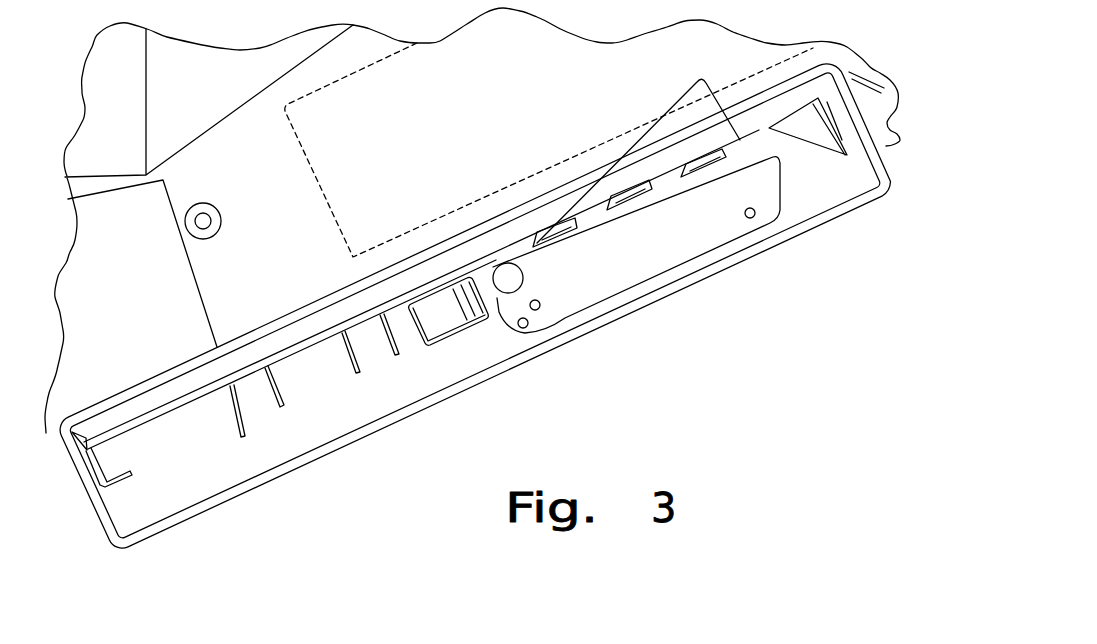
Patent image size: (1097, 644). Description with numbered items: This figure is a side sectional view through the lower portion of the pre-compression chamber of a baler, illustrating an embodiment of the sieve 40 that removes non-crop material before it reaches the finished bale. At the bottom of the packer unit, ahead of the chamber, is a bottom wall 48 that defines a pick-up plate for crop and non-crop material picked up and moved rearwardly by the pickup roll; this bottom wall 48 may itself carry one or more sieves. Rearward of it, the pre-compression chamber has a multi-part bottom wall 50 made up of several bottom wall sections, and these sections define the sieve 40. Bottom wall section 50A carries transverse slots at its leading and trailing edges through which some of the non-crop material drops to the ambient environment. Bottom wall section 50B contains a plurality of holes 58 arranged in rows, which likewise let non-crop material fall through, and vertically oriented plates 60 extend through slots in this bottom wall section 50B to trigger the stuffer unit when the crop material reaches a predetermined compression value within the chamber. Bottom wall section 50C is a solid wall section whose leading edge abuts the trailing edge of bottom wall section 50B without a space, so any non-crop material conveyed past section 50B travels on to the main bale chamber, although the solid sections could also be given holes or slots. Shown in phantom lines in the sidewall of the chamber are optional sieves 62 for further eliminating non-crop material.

The sieve 40 is at (303, 489).
The bottom wall 48 is at (173, 417).
The bottom wall 50 is at (399, 376).
The bottom wall section 50A is at (293, 358).
The bottom wall section 50B is at (463, 333).
The bottom wall section 50C is at (889, 116).
The holes 58 is at (737, 140).
The vertically oriented plates 60 is at (650, 263).
The optional sieves 62 is at (293, 133).